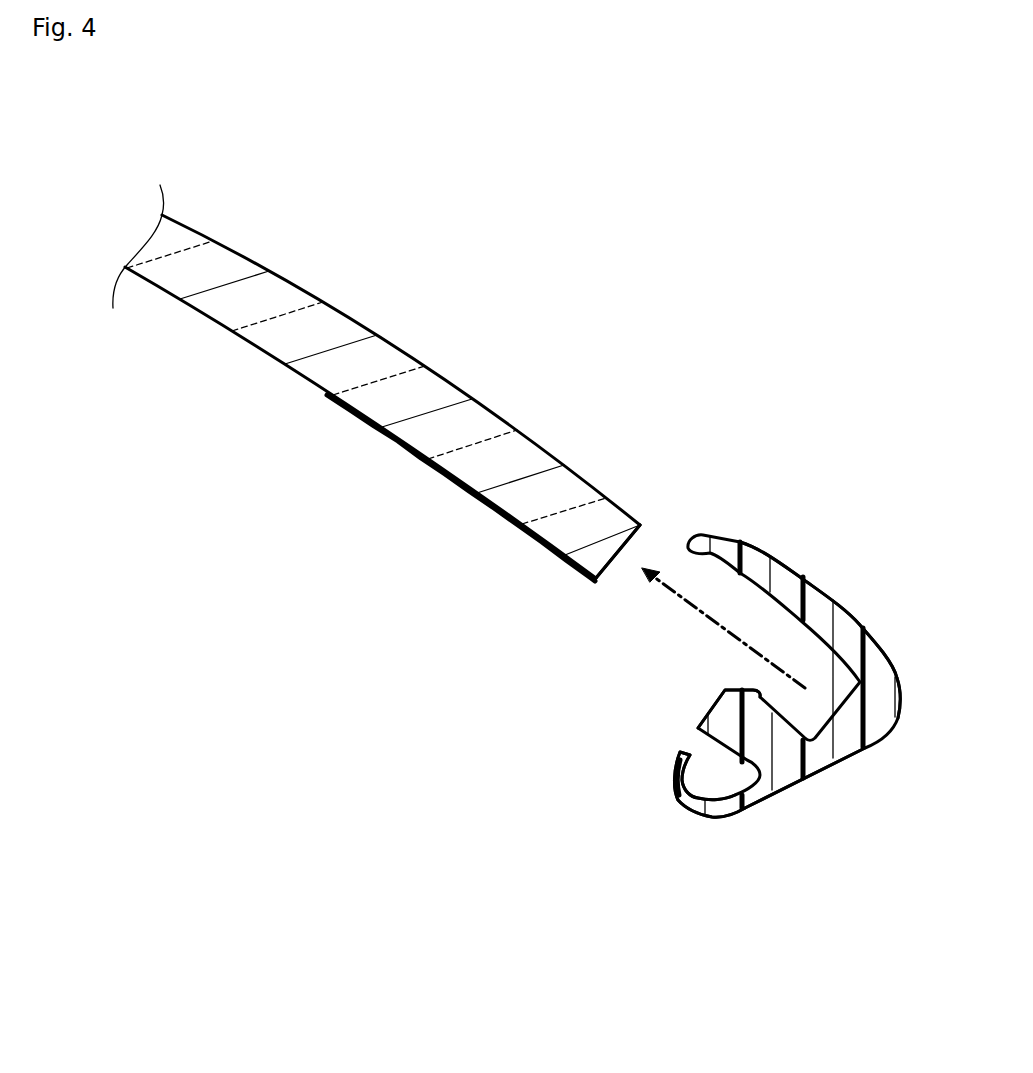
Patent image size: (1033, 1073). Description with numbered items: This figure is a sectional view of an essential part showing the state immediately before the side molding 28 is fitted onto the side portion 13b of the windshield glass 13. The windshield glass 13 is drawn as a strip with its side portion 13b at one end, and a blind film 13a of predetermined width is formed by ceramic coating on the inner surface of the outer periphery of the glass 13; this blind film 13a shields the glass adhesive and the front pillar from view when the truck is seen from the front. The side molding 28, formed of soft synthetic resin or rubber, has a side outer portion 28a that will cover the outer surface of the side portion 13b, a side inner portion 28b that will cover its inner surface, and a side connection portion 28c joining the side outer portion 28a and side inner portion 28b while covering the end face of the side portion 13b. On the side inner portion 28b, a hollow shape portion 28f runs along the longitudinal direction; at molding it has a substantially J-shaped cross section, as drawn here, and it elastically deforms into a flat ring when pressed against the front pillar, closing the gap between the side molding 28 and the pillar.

The windshield glass 13 is at (392, 337).
The blind film 13a is at (358, 418).
The side portion of the windshield glass 13b is at (590, 480).
The side molding 28 is at (818, 577).
The side outer portion 28a is at (855, 625).
The side inner portion 28b is at (711, 708).
The side connection portion 28c is at (848, 756).
The hollow shape portion 28f is at (704, 818).